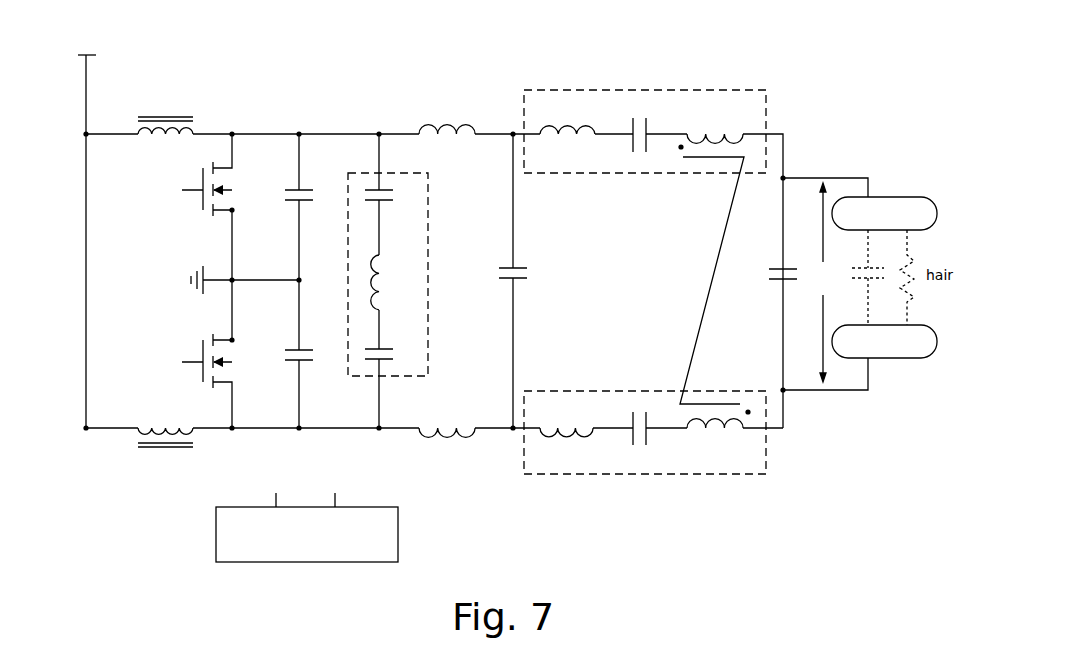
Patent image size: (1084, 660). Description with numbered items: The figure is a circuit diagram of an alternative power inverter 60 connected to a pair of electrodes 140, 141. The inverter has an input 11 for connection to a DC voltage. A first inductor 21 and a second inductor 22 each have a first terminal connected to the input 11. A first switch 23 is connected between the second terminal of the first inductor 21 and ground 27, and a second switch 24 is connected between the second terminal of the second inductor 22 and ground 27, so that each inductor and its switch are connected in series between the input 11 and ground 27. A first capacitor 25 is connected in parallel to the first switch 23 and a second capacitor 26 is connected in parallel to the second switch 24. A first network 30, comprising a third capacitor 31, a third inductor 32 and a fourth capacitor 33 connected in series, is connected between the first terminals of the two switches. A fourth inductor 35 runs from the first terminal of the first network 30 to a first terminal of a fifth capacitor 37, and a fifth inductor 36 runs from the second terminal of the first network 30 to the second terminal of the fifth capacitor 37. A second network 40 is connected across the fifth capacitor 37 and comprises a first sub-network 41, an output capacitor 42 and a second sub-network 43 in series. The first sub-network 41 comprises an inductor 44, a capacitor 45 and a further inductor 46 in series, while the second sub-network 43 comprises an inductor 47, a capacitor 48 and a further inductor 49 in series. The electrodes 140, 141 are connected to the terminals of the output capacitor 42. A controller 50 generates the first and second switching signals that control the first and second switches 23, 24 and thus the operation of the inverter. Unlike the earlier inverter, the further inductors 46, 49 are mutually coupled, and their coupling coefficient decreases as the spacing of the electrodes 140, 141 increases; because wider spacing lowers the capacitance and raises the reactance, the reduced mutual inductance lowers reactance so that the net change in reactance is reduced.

The input 11 is at (88, 55).
The first inductor 21 is at (165, 113).
The second inductor 22 is at (165, 450).
The first switch 23 is at (207, 207).
The second switch 24 is at (207, 354).
The first capacitor 25 is at (312, 207).
The second capacitor 26 is at (312, 354).
The ground 27 is at (228, 280).
The first network 30 is at (428, 238).
The third capacitor 31 is at (391, 194).
The third inductor 32 is at (392, 282).
The fourth capacitor 33 is at (391, 369).
The fourth inductor 35 is at (447, 115).
The fifth inductor 36 is at (447, 446).
The fifth capacitor 37 is at (527, 281).
The second network 40 is at (790, 434).
The first sub-network 41 is at (610, 90).
The output capacitor 42 is at (769, 275).
The second sub-network 43 is at (605, 474).
The inductor 44 is at (567, 115).
The capacitor 45 is at (637, 124).
The further inductor 46 is at (714, 262).
The inductor 47 is at (566, 448).
The capacitor 48 is at (639, 440).
The further inductor 49 is at (715, 435).
The controller 50 is at (216, 535).
The power inverter 60 is at (810, 60).
The electrode 140 is at (895, 196).
The electrode 141 is at (895, 360).